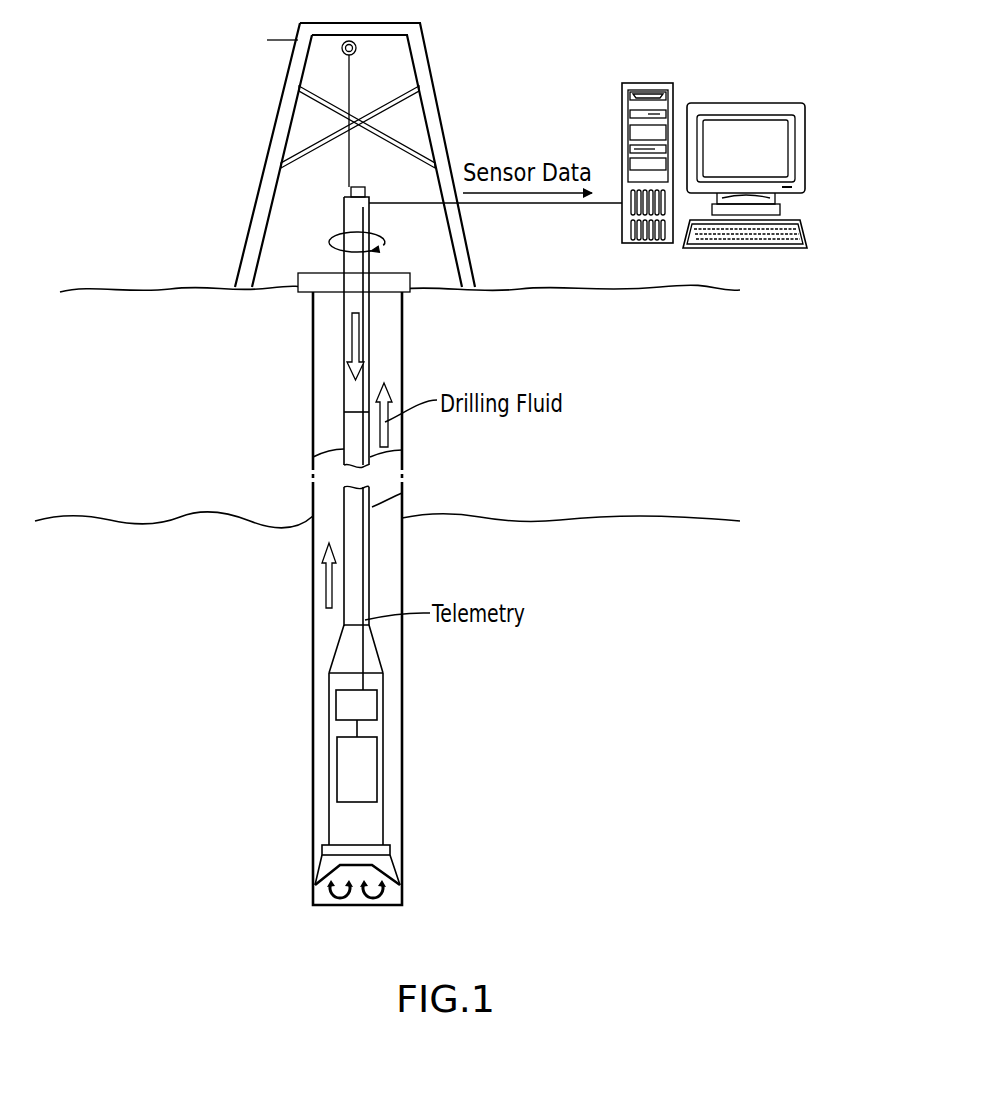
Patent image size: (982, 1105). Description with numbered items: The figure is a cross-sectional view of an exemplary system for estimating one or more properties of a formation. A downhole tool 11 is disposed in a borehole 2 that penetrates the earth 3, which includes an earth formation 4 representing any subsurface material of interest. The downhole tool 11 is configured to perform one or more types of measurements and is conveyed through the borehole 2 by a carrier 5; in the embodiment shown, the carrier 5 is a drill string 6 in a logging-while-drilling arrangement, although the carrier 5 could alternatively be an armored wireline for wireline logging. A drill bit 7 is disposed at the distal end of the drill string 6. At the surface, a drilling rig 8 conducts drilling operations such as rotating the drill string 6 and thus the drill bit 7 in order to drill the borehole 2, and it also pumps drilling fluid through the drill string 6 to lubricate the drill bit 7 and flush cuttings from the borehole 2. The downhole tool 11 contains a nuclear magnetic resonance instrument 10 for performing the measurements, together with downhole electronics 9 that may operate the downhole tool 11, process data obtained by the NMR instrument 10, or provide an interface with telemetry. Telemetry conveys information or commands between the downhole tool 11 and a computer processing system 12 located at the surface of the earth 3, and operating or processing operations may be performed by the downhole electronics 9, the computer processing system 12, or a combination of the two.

The borehole 2 is at (317, 427).
The earth 3 is at (203, 356).
The earth formation 4 is at (238, 583).
The carrier 5 is at (345, 490).
The drill string 6 is at (344, 388).
The drill bit 7 is at (332, 865).
The drilling rig 8 is at (220, 238).
The downhole electronics 9 is at (364, 718).
The nuclear magnetic resonance (NMR) instrument 10 is at (371, 770).
The downhole tool 11 is at (383, 748).
The computer processing system 12 is at (657, 83).